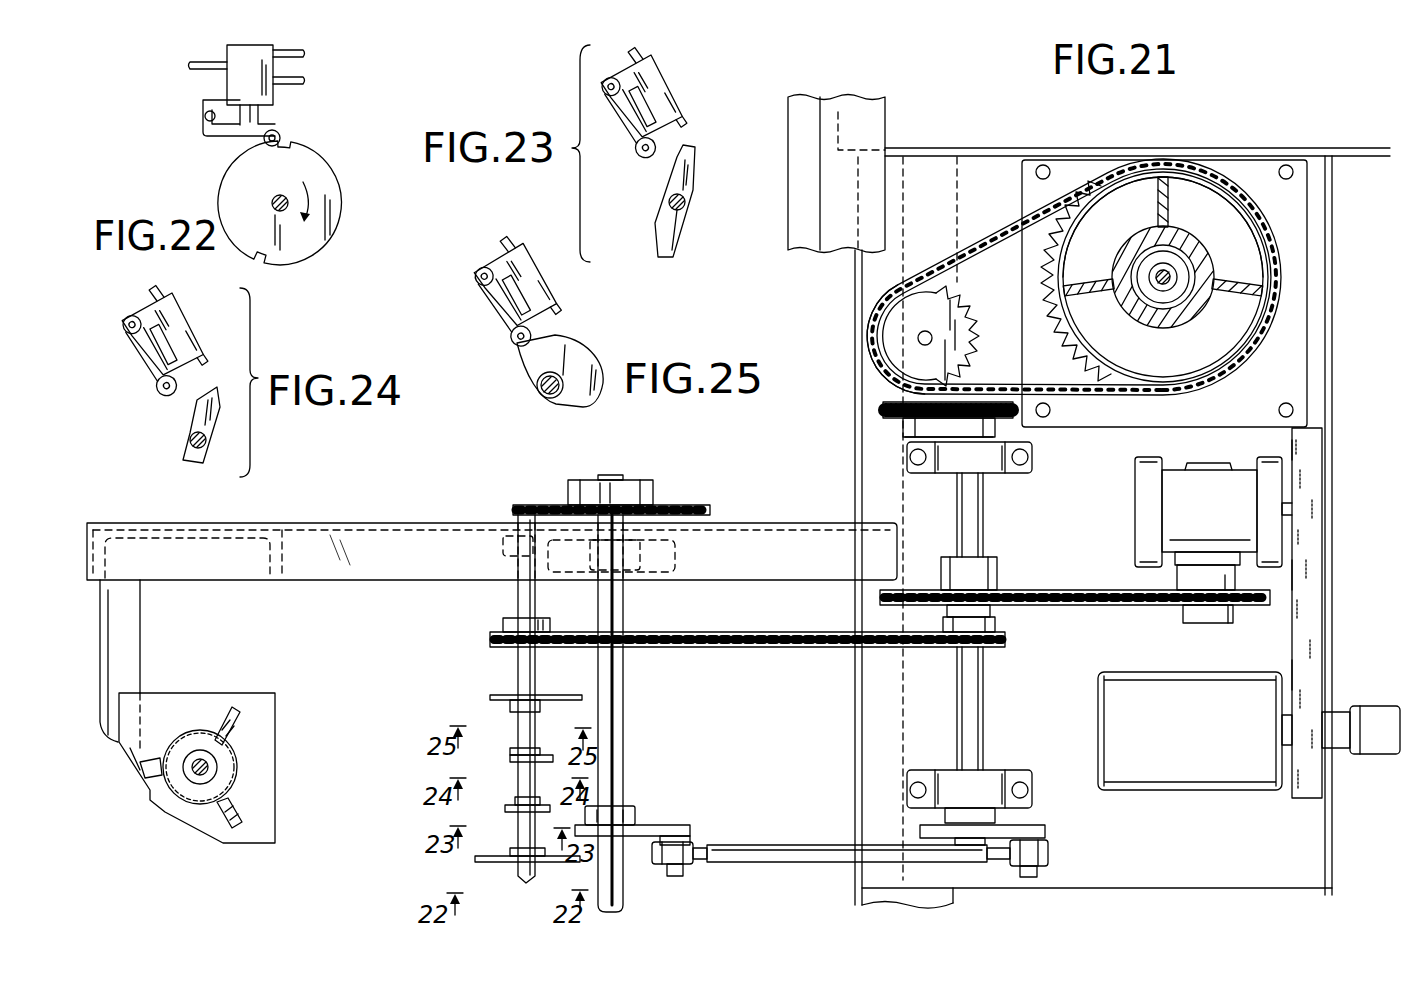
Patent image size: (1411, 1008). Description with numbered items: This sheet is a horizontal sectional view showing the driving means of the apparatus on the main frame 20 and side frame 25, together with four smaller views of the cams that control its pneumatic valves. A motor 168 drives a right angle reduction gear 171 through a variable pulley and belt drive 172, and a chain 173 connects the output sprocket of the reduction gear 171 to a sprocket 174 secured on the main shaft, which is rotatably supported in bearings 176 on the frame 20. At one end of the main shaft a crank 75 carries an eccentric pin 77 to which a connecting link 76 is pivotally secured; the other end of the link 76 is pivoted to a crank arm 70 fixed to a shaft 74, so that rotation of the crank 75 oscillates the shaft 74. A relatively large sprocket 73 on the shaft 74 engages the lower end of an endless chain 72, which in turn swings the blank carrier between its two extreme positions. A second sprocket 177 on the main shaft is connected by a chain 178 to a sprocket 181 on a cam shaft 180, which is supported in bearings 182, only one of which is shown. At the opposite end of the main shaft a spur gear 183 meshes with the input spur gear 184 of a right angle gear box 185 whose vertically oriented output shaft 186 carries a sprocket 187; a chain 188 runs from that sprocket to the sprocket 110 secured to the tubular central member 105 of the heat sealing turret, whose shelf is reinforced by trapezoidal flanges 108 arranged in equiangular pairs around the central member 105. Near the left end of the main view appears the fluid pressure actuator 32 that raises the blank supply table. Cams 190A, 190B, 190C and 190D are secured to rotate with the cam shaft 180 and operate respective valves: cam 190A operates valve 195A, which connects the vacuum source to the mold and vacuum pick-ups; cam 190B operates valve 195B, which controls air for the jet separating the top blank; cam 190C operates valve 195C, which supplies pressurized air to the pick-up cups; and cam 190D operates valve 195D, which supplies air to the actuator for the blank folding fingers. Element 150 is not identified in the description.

In FIG. 21, the main frame 20 is at (1346, 308).
In FIG. 21, the side frame 25 is at (405, 510).
In FIG. 21, the fluid pressure actuator 32 is at (205, 768).
In FIG. 21, the crank arm 70 is at (646, 838).
In FIG. 21, the endless chain 72 is at (700, 511).
In FIG. 21, the sprocket 73 is at (575, 492).
In FIG. 21, the shaft 74 is at (622, 702).
In FIG. 21, the crank 75 is at (1045, 835).
In FIG. 21, the connecting link 76 is at (787, 855).
In FIG. 21, the eccentric pin 77 is at (1028, 878).
In FIG. 21, the tubular central member 105 is at (1200, 252).
In FIG. 21, the trapezoidal flanges 108 is at (1168, 170).
In FIG. 21, the sprocket 110 is at (1068, 302).
In FIG. 21, the wheel hub 150 is at (1172, 286).
In FIG. 21, the motor 168 is at (1212, 741).
In FIG. 21, the right angle reduction gear 171 is at (1265, 538).
In FIG. 21, the variable pulley and belt drive 172 is at (1308, 627).
In FIG. 21, the chain 173 is at (1095, 602).
In FIG. 21, the sprocket 174 is at (986, 580).
In FIG. 21, the bearings 176 is at (932, 455).
In FIG. 21, the second sprocket 177 is at (998, 633).
In FIG. 21, the chain 178 is at (778, 652).
In FIG. 21, the cam shaft 180 is at (528, 594).
In FIG. 22, the cam shaft 180 is at (268, 200).
In FIG. 23, the cam shaft 180 is at (688, 208).
In FIG. 24, the cam shaft 180 is at (188, 456).
In FIG. 25, the cam shaft 180 is at (543, 392).
In FIG. 21, the sprocket 181 is at (505, 625).
In FIG. 21, the bearings 182 is at (515, 532).
In FIG. 21, the spur gear 183 is at (1010, 424).
In FIG. 21, the input spur gear 184 is at (883, 410).
In FIG. 21, the right angle gear box 185 is at (874, 290).
In FIG. 21, the output shaft 186 is at (917, 338).
In FIG. 21, the sprocket 187 is at (912, 362).
In FIG. 21, the chain 188 is at (988, 212).
In FIG. 21, the cam 190A is at (486, 860).
In FIG. 22, the cam 190A is at (318, 238).
In FIG. 21, the cam 190B is at (512, 808).
In FIG. 23, the cam 190B is at (690, 172).
In FIG. 21, the cam 190C is at (511, 755).
In FIG. 24, the cam 190C is at (196, 418).
In FIG. 21, the cam 190D is at (500, 698).
In FIG. 25, the cam 190D is at (575, 354).
In FIG. 22, the valve 195A is at (262, 76).
In FIG. 23, the control valve 195B is at (650, 78).
In FIG. 24, the valve 195C is at (160, 313).
In FIG. 25, the valve 195D is at (530, 283).